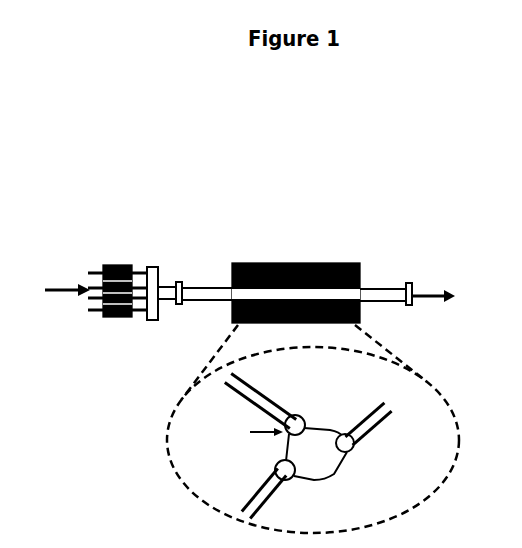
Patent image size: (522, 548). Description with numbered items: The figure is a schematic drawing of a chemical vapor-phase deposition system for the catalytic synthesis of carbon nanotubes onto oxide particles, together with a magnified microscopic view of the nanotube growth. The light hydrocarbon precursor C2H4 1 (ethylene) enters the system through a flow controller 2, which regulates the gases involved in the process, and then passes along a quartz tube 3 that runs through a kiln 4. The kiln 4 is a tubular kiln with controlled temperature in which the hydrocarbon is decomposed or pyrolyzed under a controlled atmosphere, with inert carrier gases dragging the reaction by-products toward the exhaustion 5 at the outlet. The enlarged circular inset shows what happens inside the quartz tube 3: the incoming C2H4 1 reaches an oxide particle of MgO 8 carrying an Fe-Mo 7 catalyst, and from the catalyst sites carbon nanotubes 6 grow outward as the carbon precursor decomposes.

The C2H4 1 is at (154, 360).
The flow controller 2 is at (106, 261).
The quartz tube 3 is at (212, 283).
The kiln 4 is at (358, 263).
The exhaustion 5 is at (419, 298).
The nanotubes 6 is at (362, 421).
The Fe-Mo 7 is at (293, 478).
The MgO 8 is at (337, 470).